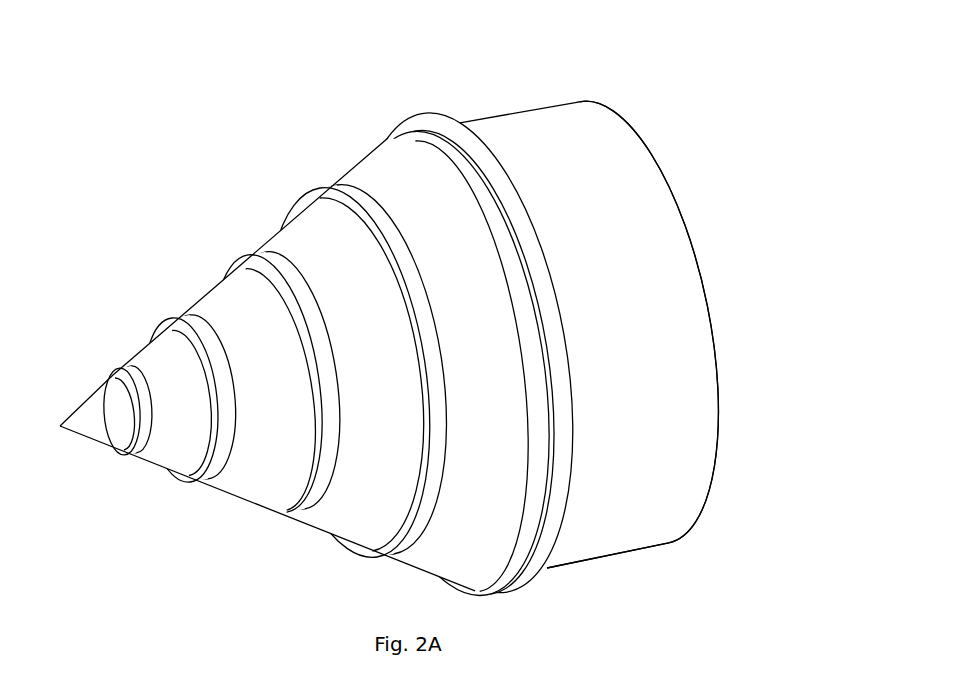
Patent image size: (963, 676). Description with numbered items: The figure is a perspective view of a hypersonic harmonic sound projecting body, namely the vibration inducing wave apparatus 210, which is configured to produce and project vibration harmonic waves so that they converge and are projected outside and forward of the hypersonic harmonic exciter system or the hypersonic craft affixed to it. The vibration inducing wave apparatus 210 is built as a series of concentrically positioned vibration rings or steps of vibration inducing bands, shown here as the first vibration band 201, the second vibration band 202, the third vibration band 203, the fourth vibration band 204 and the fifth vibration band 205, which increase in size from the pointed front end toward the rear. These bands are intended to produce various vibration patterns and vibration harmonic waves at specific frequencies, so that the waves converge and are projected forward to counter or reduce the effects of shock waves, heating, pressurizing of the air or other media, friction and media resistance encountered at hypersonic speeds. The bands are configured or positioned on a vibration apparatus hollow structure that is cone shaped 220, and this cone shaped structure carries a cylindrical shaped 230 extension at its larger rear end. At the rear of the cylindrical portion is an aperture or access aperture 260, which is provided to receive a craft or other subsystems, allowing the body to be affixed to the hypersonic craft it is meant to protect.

The first vibration band 201 is at (121, 369).
The second vibration band 202 is at (183, 318).
The third vibration band 203 is at (260, 253).
The fourth vibration band 204 is at (333, 187).
The fifth vibration band 205 is at (454, 127).
The vibration inducing wave apparatus 210 is at (518, 90).
The cone shaped hollow structure 220 is at (262, 484).
The cylindrical shaped extension 230 is at (653, 523).
The access aperture 260 is at (744, 252).